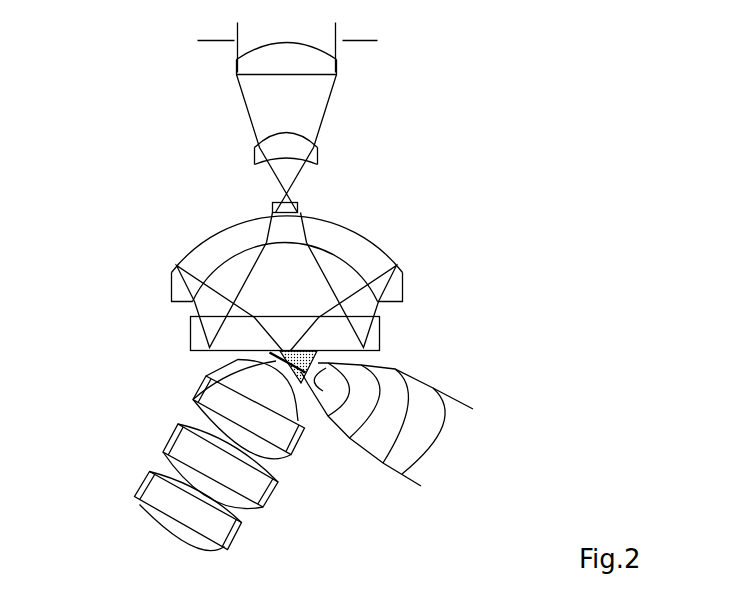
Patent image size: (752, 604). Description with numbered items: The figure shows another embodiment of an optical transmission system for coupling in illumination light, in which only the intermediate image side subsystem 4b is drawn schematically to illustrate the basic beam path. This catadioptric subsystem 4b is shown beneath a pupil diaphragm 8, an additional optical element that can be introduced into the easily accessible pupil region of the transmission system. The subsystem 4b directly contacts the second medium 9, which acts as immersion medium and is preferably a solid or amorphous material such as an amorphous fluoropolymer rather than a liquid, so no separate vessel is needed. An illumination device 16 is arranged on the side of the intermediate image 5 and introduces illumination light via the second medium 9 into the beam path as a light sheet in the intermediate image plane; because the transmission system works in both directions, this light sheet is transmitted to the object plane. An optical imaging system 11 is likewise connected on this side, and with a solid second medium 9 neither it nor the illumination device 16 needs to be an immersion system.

The pupil diaphragm 8 is at (207, 32).
The intermediate image side subsystem 4b is at (450, 347).
The intermediate image 5 is at (184, 343).
The second medium 9 is at (184, 343).
The optical imaging system 11 is at (142, 452).
The illumination device 16 is at (423, 458).